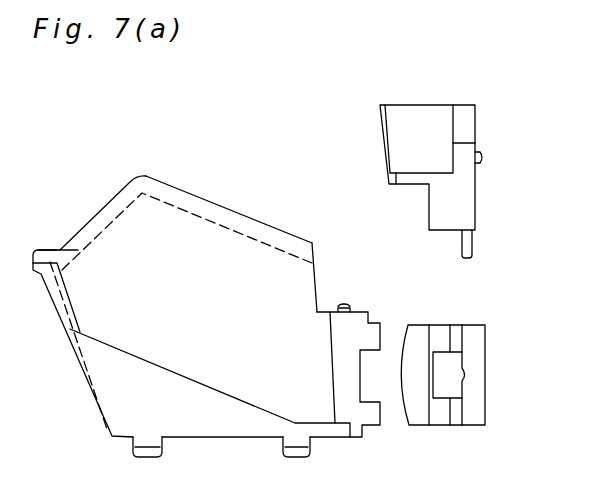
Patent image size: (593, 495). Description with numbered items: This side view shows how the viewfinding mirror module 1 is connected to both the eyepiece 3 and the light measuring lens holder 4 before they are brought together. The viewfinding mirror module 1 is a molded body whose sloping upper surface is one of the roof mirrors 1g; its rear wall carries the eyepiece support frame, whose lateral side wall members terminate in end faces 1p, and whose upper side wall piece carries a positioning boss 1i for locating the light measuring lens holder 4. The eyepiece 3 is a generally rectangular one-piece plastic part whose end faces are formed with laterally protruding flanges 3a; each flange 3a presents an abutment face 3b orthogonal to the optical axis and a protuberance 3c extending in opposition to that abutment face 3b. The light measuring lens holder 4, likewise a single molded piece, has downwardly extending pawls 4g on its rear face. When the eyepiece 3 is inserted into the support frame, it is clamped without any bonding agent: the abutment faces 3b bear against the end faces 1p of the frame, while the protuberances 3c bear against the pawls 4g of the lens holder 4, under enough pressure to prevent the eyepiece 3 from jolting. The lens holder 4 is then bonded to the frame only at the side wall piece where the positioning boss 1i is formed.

The viewfinding mirror module 1 is at (177, 191).
The roof mirror 1g is at (252, 258).
The positioning boss 1i is at (347, 304).
The end face 1p is at (381, 331).
The light measuring lens holder 4 is at (426, 116).
The pawl 4g is at (473, 248).
The eyepiece 3 is at (481, 342).
The flange 3a is at (463, 336).
The abutment face 3b is at (456, 340).
The protuberance 3c is at (464, 371).